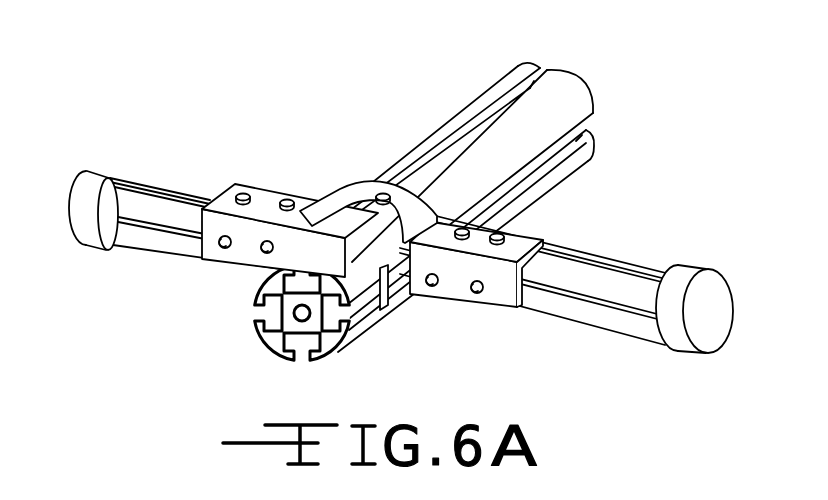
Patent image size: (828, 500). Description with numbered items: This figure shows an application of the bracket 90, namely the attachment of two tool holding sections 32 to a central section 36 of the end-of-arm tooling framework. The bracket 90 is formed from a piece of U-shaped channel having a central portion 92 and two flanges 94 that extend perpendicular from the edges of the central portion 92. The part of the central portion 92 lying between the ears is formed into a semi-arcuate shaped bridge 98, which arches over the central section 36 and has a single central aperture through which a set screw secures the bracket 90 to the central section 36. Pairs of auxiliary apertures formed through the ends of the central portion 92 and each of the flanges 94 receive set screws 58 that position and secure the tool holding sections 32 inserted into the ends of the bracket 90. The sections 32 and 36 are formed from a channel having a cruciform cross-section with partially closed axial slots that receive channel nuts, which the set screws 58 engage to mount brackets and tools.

The tool holding section 32 is at (145, 188).
The central section 36 is at (453, 122).
The set screws 58 is at (262, 247).
The bracket 90 is at (558, 202).
The central portion 92 is at (260, 205).
The flanges 94 is at (455, 286).
The semi-arcuate shaped bridge 98 is at (367, 202).